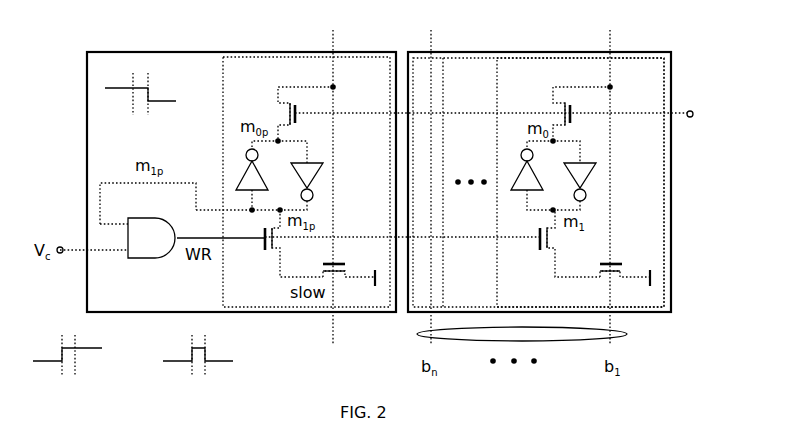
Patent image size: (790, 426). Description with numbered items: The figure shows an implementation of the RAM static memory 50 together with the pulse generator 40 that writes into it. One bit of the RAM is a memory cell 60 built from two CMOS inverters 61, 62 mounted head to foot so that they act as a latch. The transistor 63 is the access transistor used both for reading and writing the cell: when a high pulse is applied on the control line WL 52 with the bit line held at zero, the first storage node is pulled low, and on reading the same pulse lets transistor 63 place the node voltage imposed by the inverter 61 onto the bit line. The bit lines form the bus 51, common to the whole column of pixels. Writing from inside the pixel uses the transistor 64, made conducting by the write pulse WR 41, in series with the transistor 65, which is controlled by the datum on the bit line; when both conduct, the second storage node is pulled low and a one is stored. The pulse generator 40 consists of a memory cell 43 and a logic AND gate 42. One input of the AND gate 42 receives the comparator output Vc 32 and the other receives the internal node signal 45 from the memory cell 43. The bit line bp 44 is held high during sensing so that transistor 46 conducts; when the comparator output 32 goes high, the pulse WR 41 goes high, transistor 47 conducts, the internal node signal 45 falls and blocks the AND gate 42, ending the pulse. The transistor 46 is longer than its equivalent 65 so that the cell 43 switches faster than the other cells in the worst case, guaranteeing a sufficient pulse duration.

The pulse generator 40 is at (172, 52).
The RAM static memory 50 is at (497, 52).
The comparator output Vc 32 is at (58, 265).
The write pulse WR 41 is at (196, 328).
The logic AND gate 42 is at (135, 218).
The memory cell 43 is at (223, 157).
The bit line bp 44 is at (333, 333).
The signal m1p 45 is at (143, 115).
The transistor 46 is at (340, 262).
The transistor 47 is at (268, 250).
The bus 51 is at (628, 334).
The WL control line 52 is at (707, 152).
The memory cell 60 is at (496, 92).
The CMOS inverter 61 is at (510, 176).
The CMOS inverter 62 is at (598, 180).
The access transistor 63 is at (557, 103).
The write transistor 64 is at (540, 250).
The write transistor 65 is at (615, 262).